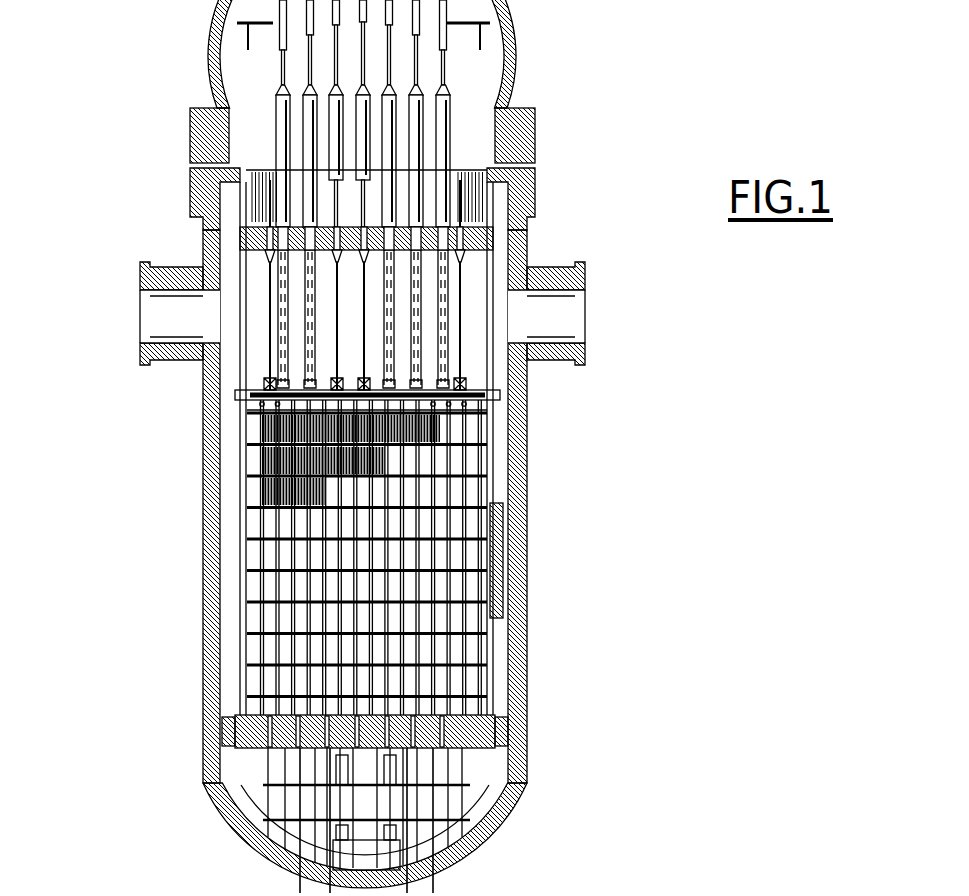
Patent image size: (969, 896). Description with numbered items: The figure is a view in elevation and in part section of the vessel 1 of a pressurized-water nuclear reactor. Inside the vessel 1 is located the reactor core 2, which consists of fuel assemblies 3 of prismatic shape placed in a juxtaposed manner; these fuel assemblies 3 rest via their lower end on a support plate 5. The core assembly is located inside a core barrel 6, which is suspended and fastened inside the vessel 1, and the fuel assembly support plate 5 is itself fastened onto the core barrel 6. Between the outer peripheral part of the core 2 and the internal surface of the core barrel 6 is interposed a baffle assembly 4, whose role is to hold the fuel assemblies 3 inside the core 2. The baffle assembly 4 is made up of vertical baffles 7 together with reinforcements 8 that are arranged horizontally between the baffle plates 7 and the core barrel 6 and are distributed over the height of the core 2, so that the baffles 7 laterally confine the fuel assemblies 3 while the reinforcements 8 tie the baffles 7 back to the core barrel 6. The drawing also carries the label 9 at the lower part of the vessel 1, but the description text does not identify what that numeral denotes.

The vessel 1 is at (158, 725).
The reactor core 2 is at (367, 557).
The fuel assemblies 3 is at (458, 538).
The baffle assembly 4 is at (243, 557).
The support plate 5 is at (467, 745).
The core barrel 6 is at (240, 365).
The vertical baffles 7 is at (463, 650).
The reinforcements 8 is at (502, 580).
The in-core instrumentation guide tubes 9 is at (440, 822).